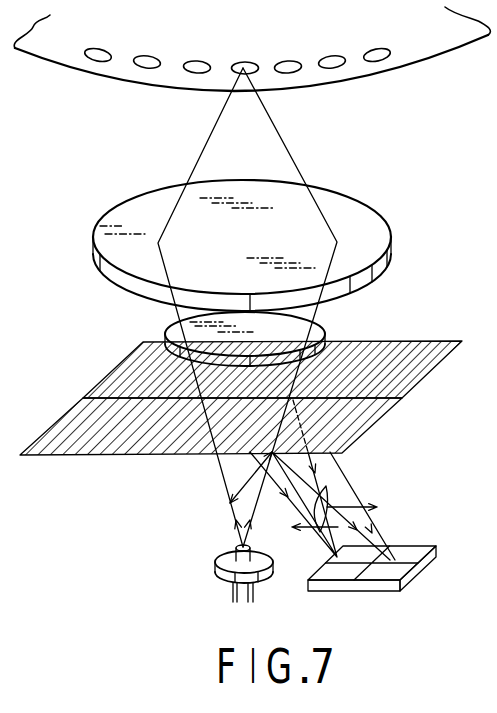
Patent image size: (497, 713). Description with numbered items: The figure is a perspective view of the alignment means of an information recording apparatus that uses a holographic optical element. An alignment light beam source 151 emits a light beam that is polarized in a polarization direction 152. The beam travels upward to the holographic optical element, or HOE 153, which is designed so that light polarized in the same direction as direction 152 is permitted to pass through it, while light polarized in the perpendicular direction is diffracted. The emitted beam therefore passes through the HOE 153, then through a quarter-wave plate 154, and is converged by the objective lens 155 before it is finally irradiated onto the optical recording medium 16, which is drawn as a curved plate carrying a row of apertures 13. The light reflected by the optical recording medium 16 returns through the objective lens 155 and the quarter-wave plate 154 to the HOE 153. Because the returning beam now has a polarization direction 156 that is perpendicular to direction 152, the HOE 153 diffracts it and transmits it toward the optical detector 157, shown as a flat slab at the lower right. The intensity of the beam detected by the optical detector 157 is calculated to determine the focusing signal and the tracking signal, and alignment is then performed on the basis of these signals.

The aperture 13 is at (246, 62).
The optical recording medium 16 is at (448, 58).
The alignment light beam source 151 is at (215, 560).
The polarization direction 152 is at (240, 483).
The holographic optical element 153 is at (93, 386).
The λ/4 plate 154 is at (325, 322).
The objective lens 155 is at (372, 231).
The polarization direction 156 is at (326, 487).
The optical detector 157 is at (423, 546).